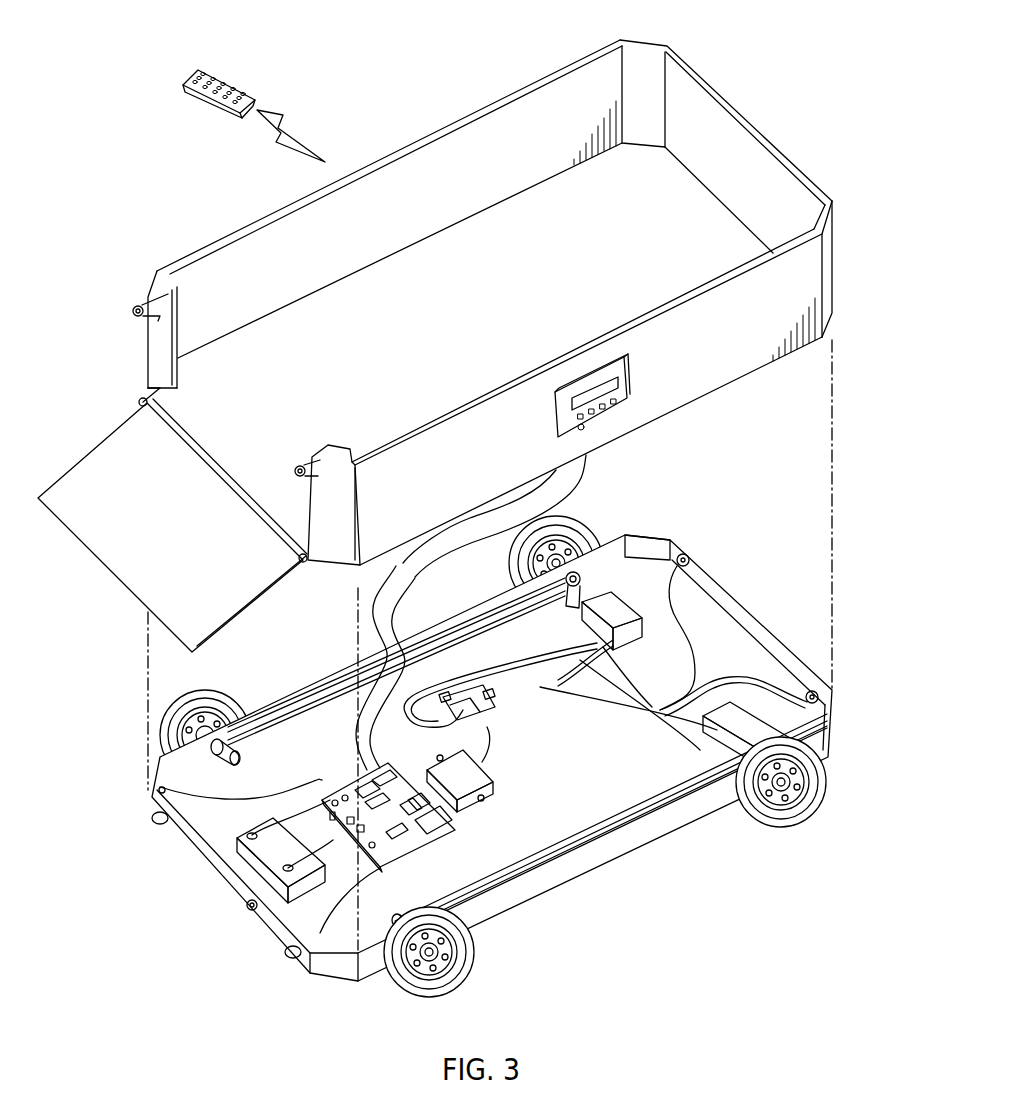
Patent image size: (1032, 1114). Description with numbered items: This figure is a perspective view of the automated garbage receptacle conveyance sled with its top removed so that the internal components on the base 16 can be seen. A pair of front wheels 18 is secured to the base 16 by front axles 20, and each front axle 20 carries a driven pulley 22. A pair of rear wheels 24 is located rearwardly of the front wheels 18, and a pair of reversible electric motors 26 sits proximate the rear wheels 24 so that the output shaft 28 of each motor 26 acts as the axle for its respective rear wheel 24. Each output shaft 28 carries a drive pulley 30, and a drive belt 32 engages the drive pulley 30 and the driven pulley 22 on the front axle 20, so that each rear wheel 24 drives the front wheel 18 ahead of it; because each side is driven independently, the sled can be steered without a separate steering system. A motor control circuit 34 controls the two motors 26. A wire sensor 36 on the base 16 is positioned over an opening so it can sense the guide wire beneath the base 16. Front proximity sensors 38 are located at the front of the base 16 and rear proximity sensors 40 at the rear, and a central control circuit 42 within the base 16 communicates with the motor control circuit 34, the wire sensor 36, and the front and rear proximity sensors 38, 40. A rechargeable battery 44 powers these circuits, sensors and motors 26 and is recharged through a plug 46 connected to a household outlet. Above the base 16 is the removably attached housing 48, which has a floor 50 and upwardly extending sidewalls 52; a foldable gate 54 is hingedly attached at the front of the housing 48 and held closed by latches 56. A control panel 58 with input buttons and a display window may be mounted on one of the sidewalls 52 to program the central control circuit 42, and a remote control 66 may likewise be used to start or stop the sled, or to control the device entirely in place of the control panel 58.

The base 16 is at (612, 871).
The front wheels 18 is at (214, 693).
The front axles 20 is at (162, 790).
The pulley 22 is at (213, 757).
The rear wheels 24 is at (578, 532).
The reversible electric motors 26 is at (627, 613).
The output shaft 28 is at (577, 590).
The pulley 30 is at (592, 570).
The drive belt 32 is at (330, 685).
The motor control circuit 34 is at (500, 700).
The wire sensor 36 is at (480, 777).
The proximity sensors 38 is at (158, 822).
The rear proximity sensors 40 is at (698, 558).
The central control circuit 42 is at (440, 840).
The rechargeable battery 44 is at (267, 847).
The plug 46 is at (250, 907).
The housing 48 is at (406, 127).
The floor 50 is at (680, 210).
The sidewalls 52 is at (528, 107).
The foldable gate 54 is at (130, 443).
The latches 56 is at (135, 306).
The control panel 58 is at (628, 395).
The remote control 66 is at (232, 85).